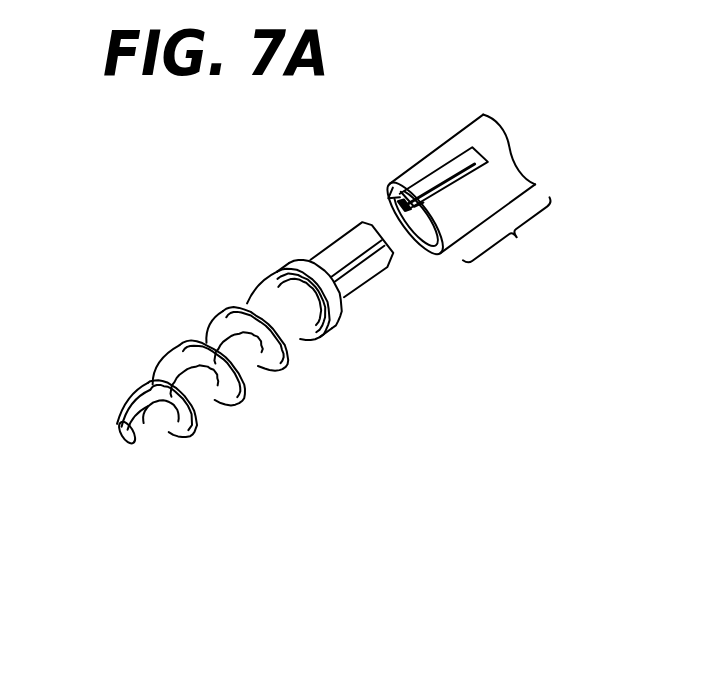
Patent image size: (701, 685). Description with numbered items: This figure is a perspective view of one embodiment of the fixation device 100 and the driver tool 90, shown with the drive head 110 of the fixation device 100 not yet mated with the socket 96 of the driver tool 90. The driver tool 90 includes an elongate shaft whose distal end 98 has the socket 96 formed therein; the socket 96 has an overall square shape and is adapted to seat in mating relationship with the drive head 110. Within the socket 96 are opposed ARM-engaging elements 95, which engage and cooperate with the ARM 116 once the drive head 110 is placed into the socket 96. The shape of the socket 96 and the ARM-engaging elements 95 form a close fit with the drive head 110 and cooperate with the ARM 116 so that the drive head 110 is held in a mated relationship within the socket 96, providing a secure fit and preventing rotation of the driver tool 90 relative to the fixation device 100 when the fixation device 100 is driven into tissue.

The driver tool 90 is at (507, 112).
The ARM-engaging element 95 is at (450, 182).
The socket 96 is at (386, 198).
The distal end 98 is at (510, 233).
The fixation device 100 is at (131, 318).
The drive head 110 is at (357, 290).
The ARM 116 is at (350, 255).